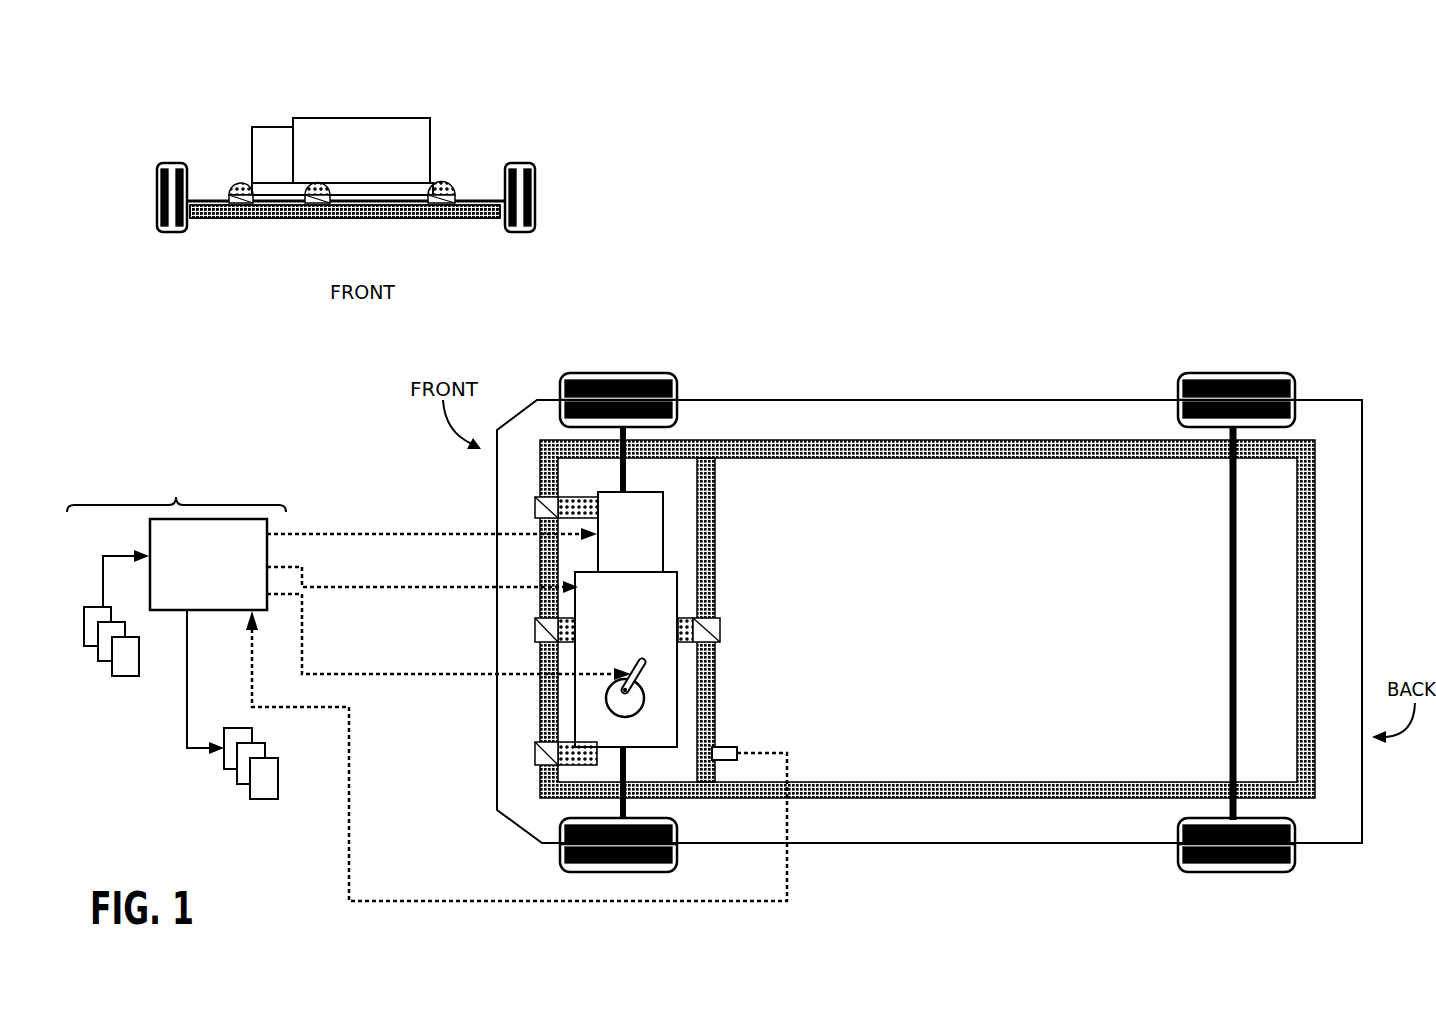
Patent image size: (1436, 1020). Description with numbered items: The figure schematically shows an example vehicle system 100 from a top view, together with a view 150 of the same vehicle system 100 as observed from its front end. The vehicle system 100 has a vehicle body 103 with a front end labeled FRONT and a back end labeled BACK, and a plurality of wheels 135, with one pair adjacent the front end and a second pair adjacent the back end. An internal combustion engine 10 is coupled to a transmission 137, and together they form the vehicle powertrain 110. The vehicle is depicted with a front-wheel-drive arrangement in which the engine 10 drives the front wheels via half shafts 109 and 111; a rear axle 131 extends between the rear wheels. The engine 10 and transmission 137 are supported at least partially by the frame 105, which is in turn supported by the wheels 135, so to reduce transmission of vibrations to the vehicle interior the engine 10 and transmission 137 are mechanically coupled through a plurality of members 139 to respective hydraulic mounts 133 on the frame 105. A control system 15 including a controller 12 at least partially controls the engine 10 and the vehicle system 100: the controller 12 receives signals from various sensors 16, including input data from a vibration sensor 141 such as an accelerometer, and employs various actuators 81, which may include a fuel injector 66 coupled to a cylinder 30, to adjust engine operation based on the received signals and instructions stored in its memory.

The view 150 is at (499, 60).
The vehicle system 100 is at (1293, 256).
The vehicle body 103 is at (843, 398).
The frame 105 is at (197, 218).
The vehicle powertrain 110 is at (692, 553).
The half shaft 111 is at (207, 196).
The half shaft 109 is at (477, 196).
The rear axle 131 is at (1232, 598).
The wheels 135 is at (172, 165).
The hydraulic mounts 133 is at (233, 200).
The members 139 is at (245, 185).
The transmission 137 is at (273, 145).
The engine 10 is at (464, 432).
The cylinder 30 is at (645, 703).
The fuel injector 66 is at (631, 668).
The vibration sensor 141 is at (723, 745).
The control system 15 is at (176, 485).
The controller 12 is at (208, 564).
The sensors 16 is at (124, 644).
The actuators 81 is at (244, 734).